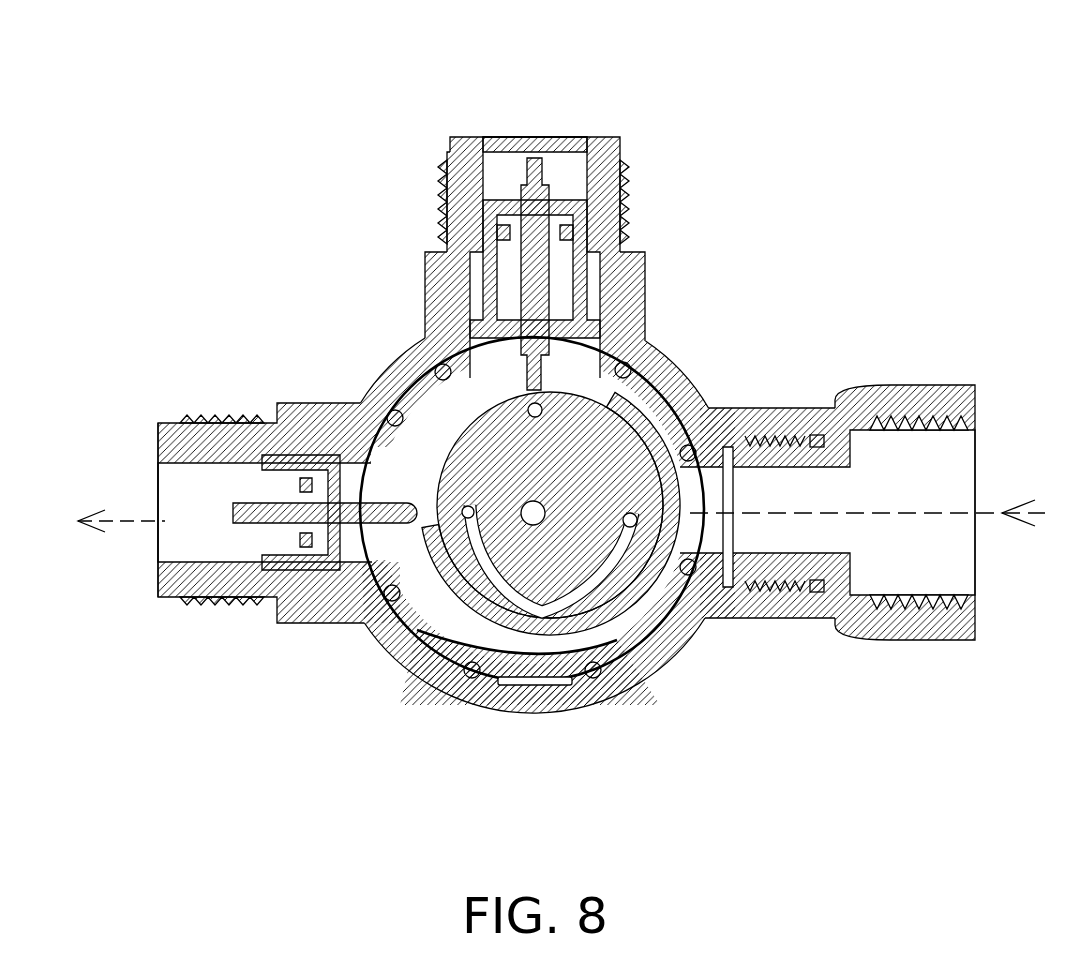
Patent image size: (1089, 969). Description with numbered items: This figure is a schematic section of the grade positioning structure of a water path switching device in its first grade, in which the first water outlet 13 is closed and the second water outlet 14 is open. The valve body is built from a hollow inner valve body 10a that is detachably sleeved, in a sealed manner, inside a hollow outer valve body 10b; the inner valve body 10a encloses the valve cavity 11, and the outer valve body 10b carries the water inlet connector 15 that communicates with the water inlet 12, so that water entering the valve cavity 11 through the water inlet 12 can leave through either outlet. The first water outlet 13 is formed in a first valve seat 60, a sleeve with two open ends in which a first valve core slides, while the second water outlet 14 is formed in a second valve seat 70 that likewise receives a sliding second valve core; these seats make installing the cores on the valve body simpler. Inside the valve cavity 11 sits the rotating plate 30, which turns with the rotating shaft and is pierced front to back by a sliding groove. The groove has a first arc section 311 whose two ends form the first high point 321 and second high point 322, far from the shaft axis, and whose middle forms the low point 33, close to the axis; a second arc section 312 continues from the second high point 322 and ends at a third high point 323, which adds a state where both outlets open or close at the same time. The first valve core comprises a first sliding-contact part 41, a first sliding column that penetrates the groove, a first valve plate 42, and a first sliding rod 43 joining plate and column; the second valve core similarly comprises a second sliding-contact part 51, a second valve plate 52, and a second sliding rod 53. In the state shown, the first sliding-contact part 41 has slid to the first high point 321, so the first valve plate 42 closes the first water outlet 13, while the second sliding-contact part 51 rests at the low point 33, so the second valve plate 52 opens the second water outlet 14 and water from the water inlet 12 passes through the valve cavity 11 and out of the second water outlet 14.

The inner valve body 10a is at (680, 382).
The outer valve body 10b is at (647, 377).
The valve cavity 11 is at (373, 627).
The water inlet 12 is at (735, 548).
The first water outlet 13 is at (573, 185).
The second water outlet 14 is at (180, 445).
The water inlet connector 15 is at (818, 610).
The rotating plate 30 is at (607, 462).
The first arc section 311 is at (487, 617).
The second arc section 312 is at (612, 577).
The first high point 321 is at (533, 410).
The second high point 322 is at (545, 620).
The third high point 323 is at (648, 585).
The low point 33 is at (405, 640).
The first sliding-contact part 41 is at (517, 400).
The first valve plate 42 is at (628, 185).
The first sliding rod 43 is at (645, 297).
The second sliding-contact part 51 is at (482, 490).
The second valve plate 52 is at (230, 452).
The second sliding rod 53 is at (373, 497).
The first valve seat 60 is at (605, 265).
The second valve seat 70 is at (283, 438).